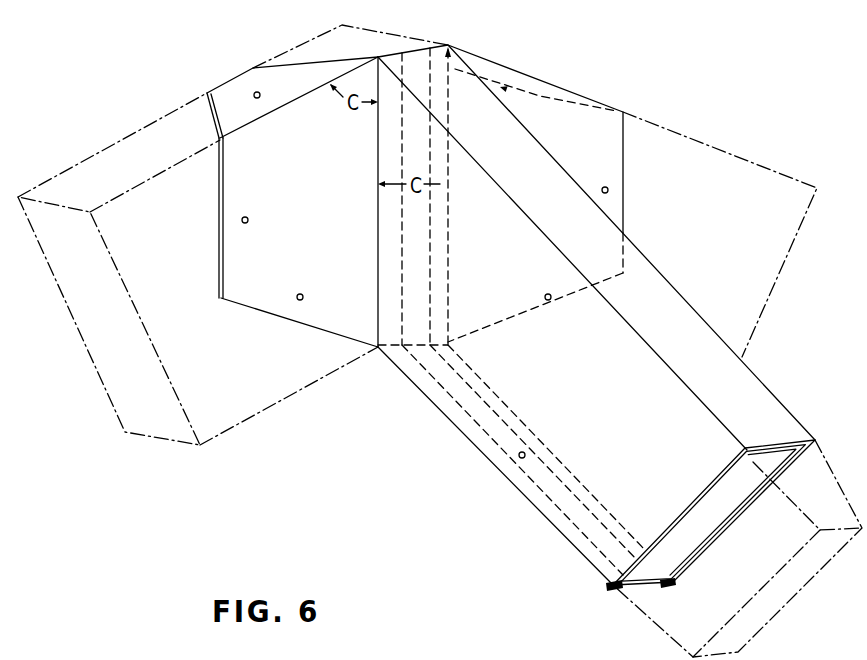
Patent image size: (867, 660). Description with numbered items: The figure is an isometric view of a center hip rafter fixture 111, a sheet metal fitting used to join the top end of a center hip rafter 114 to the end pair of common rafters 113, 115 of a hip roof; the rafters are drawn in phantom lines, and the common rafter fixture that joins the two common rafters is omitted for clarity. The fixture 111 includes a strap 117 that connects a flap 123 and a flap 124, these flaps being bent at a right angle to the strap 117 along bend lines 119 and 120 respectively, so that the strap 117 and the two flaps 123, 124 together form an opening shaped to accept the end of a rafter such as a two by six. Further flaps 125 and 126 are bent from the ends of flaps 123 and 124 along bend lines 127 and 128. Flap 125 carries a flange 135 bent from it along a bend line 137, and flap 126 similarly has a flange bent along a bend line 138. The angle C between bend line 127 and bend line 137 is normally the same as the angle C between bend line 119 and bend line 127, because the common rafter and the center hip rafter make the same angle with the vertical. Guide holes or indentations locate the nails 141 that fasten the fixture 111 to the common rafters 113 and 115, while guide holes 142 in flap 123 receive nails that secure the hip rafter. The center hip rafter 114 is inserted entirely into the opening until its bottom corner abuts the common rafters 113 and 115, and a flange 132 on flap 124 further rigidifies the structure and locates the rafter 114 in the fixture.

The center hip rafter fixture 111 is at (596, 331).
The common rafter 113 is at (311, 386).
The center hip rafter 114 is at (783, 612).
The common rafter 115 is at (707, 143).
The strap 117 is at (673, 310).
The bend line 119 is at (503, 185).
The bend line 120 is at (652, 263).
The flap 123 is at (570, 538).
The flap 124 is at (700, 530).
The flap 125 is at (318, 205).
The flap 126 is at (593, 151).
The bend line 127 is at (378, 163).
The bend line 128 is at (449, 198).
The flange 132 is at (618, 586).
The flange 135 is at (240, 90).
The bend line 137 is at (275, 111).
The bend line 138 is at (518, 72).
The nails 141 is at (257, 92).
The guide holes 142 is at (545, 297).